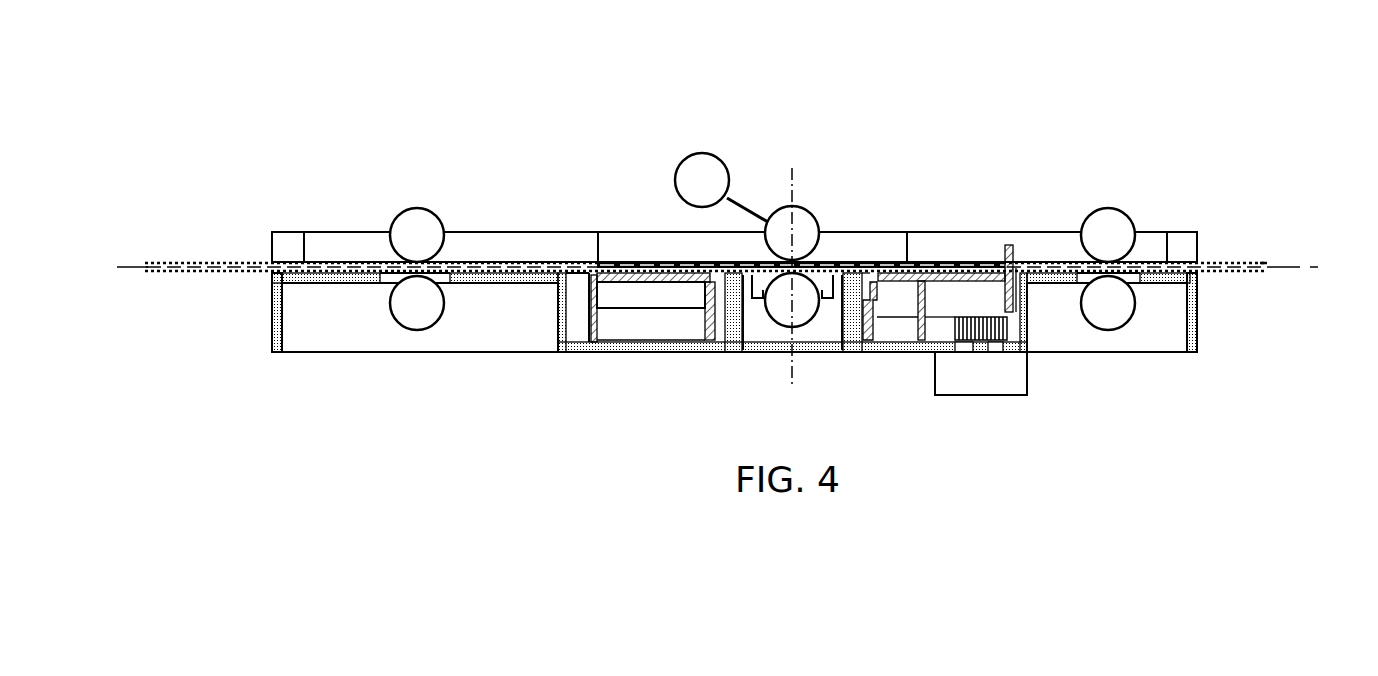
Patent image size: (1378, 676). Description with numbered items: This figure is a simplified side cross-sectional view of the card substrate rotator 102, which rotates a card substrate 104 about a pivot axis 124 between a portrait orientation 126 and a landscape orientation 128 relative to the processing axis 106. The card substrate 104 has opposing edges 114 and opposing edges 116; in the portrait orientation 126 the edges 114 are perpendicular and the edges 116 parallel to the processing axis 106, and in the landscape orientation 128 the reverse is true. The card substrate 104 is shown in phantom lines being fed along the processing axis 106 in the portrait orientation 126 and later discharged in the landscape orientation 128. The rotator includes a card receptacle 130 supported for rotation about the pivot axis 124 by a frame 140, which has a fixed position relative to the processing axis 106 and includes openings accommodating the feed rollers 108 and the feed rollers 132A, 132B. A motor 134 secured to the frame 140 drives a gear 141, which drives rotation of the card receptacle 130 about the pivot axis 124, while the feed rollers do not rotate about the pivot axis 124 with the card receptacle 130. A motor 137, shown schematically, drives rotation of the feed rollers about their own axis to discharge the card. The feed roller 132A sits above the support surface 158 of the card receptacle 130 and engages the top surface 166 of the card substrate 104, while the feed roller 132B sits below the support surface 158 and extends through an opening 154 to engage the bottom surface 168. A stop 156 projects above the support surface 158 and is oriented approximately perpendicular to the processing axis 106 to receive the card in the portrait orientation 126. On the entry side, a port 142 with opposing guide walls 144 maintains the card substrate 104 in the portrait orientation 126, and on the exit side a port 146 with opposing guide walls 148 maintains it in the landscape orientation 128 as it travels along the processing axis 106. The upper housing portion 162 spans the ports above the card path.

The card substrate rotator 102 is at (360, 108).
The card substrate 104 is at (185, 273).
The processing axis 106 is at (1295, 268).
The feed rollers 108 is at (415, 210).
The opposing edges 114 is at (147, 262).
The opposing edges 116 is at (1267, 263).
The pivot axis 124 is at (792, 168).
The portrait orientation 126 is at (152, 287).
The landscape orientation 128 is at (1258, 285).
The card receptacle 130 is at (588, 300).
The feed roller 132A is at (810, 218).
The feed roller 132B is at (773, 322).
The motor 134 is at (1015, 382).
The motor 137 is at (703, 162).
The frame 140 is at (880, 352).
The gear 141 is at (955, 332).
The port 142 is at (255, 218).
The guide walls 144 is at (312, 240).
The port 146 is at (1235, 222).
The guide walls 148 is at (1158, 238).
The opening 154 is at (818, 340).
The stop 156 is at (1012, 248).
The support surface 158 is at (932, 266).
The upper housing 162 is at (662, 240).
The top surface 166 is at (615, 262).
The bottom surface 168 is at (630, 285).